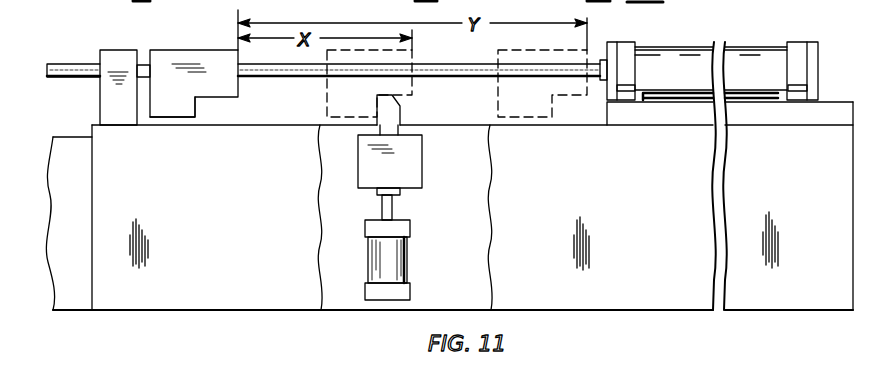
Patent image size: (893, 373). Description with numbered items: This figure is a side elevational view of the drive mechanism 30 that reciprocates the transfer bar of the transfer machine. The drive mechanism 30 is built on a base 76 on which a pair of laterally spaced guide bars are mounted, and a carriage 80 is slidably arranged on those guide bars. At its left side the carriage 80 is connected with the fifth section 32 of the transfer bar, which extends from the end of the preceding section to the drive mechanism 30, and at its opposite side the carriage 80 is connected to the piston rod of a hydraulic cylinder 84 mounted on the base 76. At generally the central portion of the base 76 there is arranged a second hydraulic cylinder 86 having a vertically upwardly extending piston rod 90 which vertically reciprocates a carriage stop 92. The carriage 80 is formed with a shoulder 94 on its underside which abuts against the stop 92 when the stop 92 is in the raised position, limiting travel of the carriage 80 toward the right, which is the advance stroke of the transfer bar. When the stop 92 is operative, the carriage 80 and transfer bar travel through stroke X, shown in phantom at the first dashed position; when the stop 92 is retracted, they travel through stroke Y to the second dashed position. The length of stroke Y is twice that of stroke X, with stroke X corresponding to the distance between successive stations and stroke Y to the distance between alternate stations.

The drive mechanism 30 is at (777, 32).
The fifth section of the transfer bar 32 is at (75, 67).
The base 76 is at (625, 293).
The carriage 80 is at (190, 61).
The hydraulic cylinder 84 is at (695, 57).
The hydraulic cylinder 86 is at (397, 260).
The piston rod 90 is at (395, 209).
The carriage stop 92 is at (390, 112).
The shoulder 94 is at (200, 107).